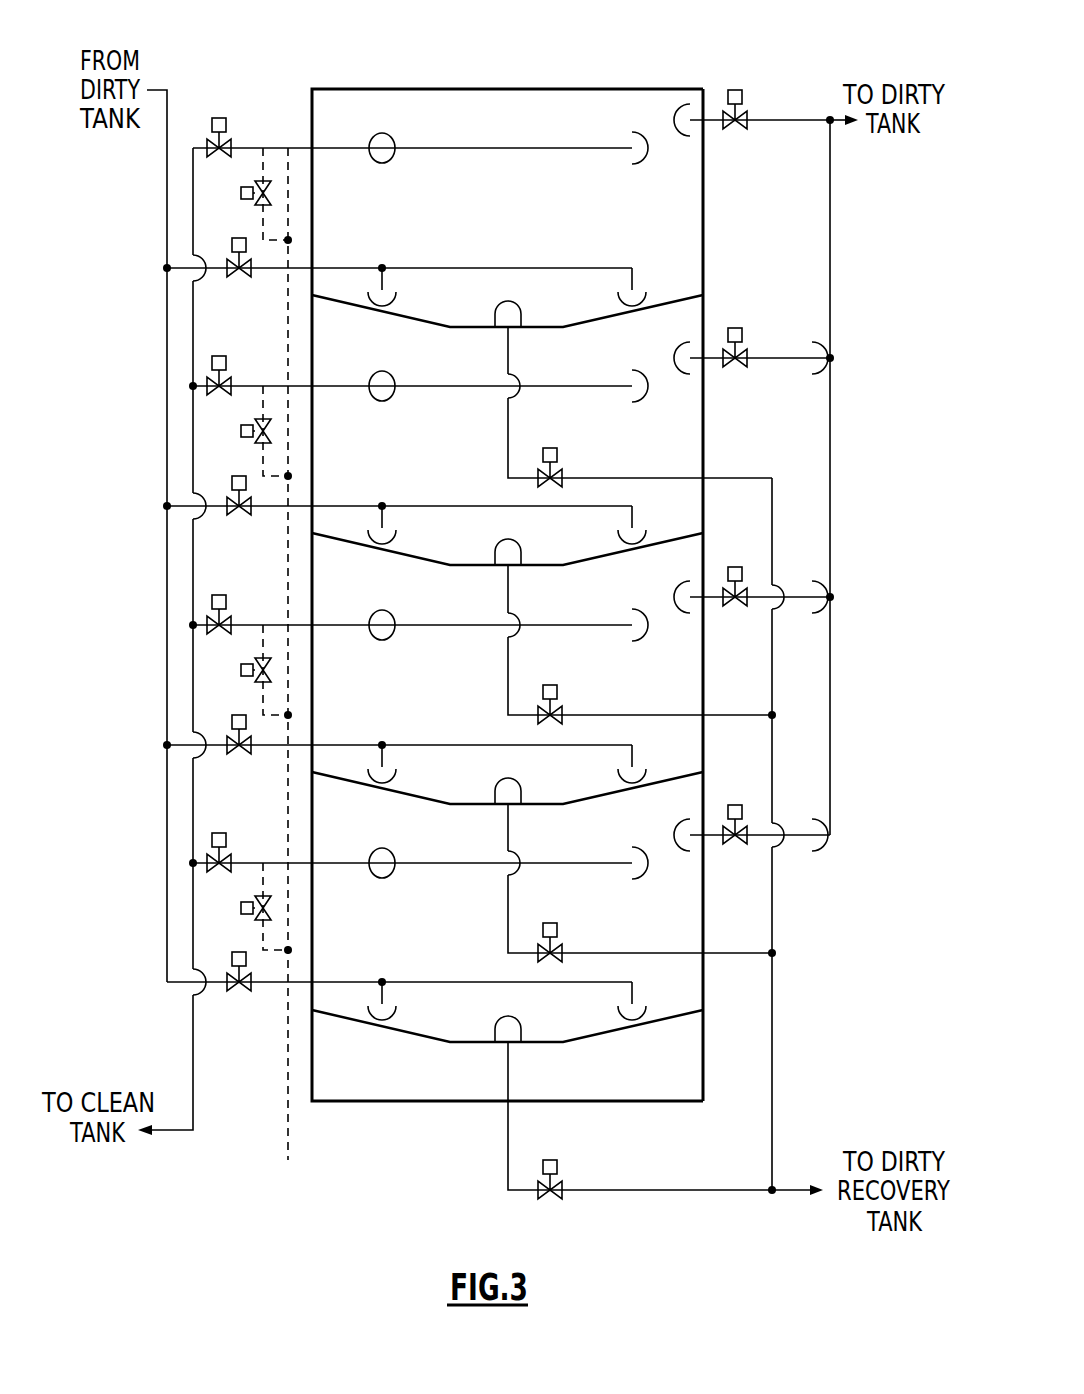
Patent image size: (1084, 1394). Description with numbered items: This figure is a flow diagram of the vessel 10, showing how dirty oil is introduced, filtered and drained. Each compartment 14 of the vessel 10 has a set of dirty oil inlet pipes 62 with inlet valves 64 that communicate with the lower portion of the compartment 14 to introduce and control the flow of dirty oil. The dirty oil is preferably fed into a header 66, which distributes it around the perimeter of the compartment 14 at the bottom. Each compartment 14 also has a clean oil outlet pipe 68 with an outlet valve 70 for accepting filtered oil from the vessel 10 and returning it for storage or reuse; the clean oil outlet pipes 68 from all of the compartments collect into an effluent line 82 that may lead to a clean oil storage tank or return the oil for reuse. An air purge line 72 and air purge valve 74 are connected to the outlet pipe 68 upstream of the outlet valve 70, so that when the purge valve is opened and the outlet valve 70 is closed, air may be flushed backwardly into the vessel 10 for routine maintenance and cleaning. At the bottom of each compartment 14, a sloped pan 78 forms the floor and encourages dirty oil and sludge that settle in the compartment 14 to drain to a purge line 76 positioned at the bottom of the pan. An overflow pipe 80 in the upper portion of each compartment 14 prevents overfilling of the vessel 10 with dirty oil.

The vessel 10 is at (378, 66).
The compartment 14 is at (758, 208).
The dirty oil inlet pipe 62 is at (268, 278).
The inlet valve 64 is at (238, 235).
The header 66 is at (488, 265).
The clean oil outlet pipe 68 is at (288, 145).
The outlet valve 70 is at (218, 117).
The air purge line 72 is at (256, 148).
The air purge valve 74 is at (240, 193).
The purge line 76 is at (510, 432).
The sloped pan 78 is at (663, 304).
The overflow pipe 80 is at (712, 118).
The effluent line 82 is at (193, 1020).